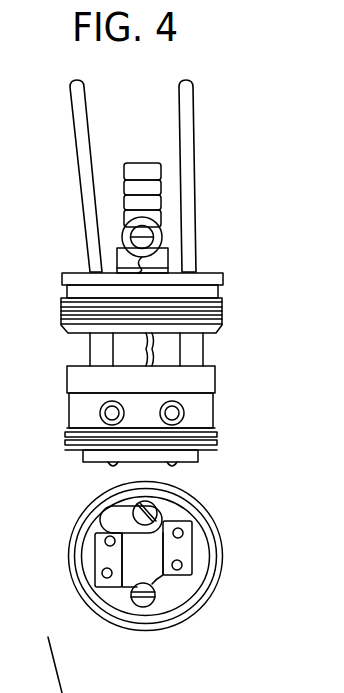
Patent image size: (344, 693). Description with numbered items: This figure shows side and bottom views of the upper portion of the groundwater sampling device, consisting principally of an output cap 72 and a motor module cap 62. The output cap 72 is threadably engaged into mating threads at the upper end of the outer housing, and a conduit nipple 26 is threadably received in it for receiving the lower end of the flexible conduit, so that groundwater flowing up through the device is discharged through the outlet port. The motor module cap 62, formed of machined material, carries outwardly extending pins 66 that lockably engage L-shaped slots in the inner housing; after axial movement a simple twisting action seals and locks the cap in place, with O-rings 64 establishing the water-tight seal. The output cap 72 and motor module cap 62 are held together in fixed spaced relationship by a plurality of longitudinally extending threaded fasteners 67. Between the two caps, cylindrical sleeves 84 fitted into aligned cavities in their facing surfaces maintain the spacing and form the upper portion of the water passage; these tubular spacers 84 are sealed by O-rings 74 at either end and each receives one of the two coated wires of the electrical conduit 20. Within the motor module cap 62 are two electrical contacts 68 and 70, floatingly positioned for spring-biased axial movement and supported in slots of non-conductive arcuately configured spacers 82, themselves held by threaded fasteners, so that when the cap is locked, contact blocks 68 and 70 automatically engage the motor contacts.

The electrical conduit 20 is at (182, 98).
The conduit nipple 26 is at (144, 178).
The O-rings 74 is at (222, 292).
The output cap 72 is at (222, 310).
The threaded fasteners 67 is at (140, 355).
The cylindrical sleeves 84 is at (203, 348).
The pins 66 is at (100, 410).
The motor module cap 62 is at (233, 540).
The O-rings 64 is at (65, 438).
The electrical contact 70 is at (92, 463).
The electrical contact 68 is at (183, 462).
The arcuately configured spacers 82 is at (158, 600).